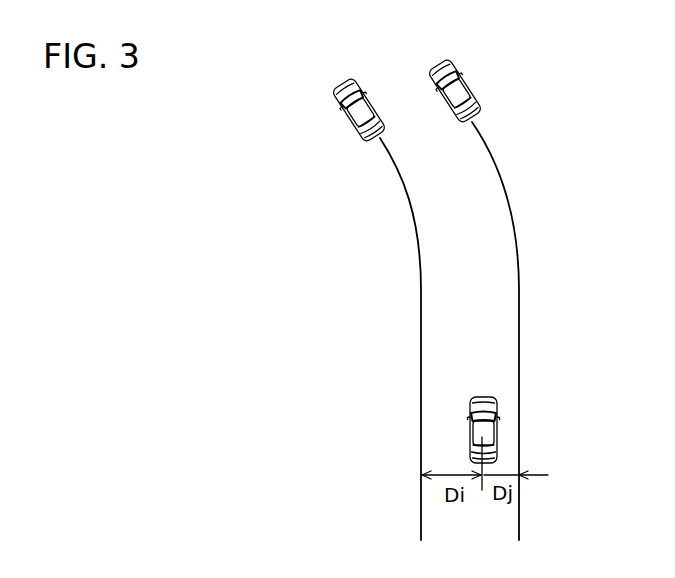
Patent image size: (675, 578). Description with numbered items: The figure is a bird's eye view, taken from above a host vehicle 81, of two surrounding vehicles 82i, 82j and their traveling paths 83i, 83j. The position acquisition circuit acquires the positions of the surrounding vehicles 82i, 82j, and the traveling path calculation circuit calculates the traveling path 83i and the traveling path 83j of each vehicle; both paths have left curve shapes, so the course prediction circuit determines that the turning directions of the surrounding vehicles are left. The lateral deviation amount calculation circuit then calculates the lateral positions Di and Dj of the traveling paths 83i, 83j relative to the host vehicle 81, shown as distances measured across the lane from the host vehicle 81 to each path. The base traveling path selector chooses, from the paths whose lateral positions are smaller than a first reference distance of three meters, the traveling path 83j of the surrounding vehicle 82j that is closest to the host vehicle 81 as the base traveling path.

The host vehicle 81 is at (483, 397).
The surrounding vehicle 82i is at (351, 124).
The surrounding vehicle 82j is at (463, 80).
The traveling path 83i is at (420, 300).
The traveling path 83j is at (520, 300).